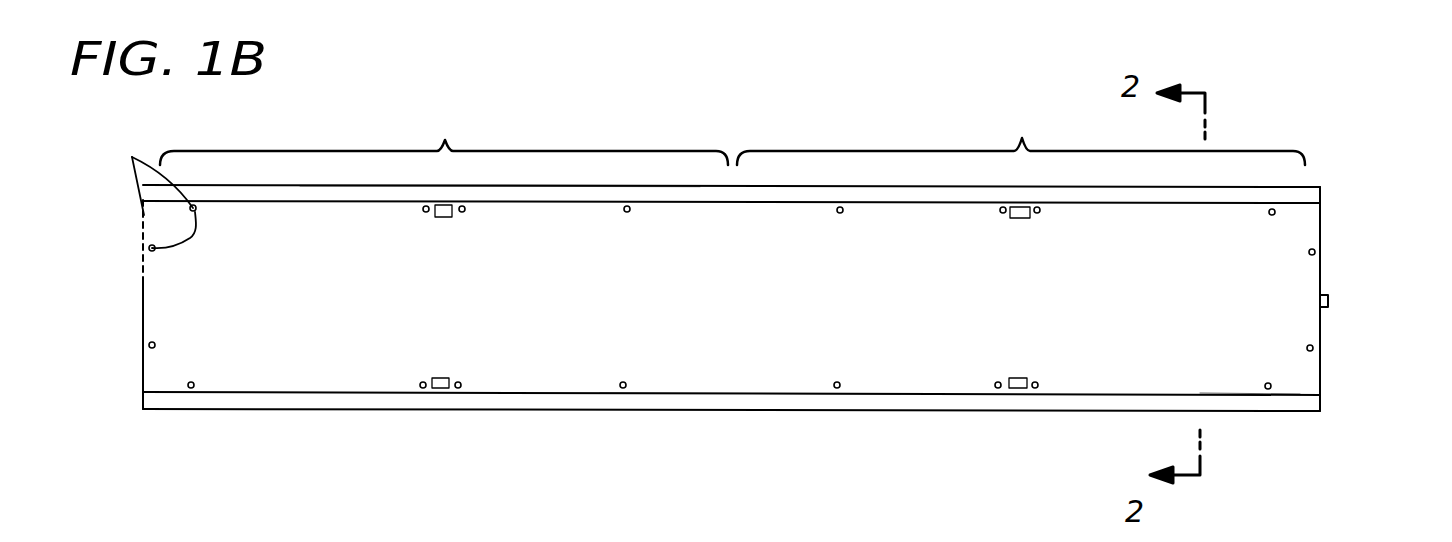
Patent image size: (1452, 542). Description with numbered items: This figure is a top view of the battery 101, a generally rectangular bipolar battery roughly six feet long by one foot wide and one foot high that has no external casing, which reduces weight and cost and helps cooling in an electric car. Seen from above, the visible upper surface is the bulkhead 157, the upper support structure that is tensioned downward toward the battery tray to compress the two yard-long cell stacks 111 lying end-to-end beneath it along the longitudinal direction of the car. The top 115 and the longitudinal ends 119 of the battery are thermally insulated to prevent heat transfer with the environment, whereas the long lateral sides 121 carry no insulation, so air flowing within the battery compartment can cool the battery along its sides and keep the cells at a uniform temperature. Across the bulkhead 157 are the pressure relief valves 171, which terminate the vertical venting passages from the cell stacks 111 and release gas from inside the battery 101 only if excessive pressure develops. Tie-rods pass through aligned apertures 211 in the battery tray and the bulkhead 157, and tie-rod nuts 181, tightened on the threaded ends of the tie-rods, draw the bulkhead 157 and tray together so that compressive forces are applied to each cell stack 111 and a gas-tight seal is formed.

The battery 101 is at (1350, 266).
The cell stacks 111 is at (732, 136).
The top 115 is at (1230, 375).
The longitudinal ends 119 is at (143, 320).
The lateral sides 121 is at (267, 183).
The bulkhead 157 is at (752, 358).
The pressure relief valves 171 is at (443, 217).
The tie-rod nuts 181 is at (627, 206).
The aligned apertures 211 is at (151, 187).